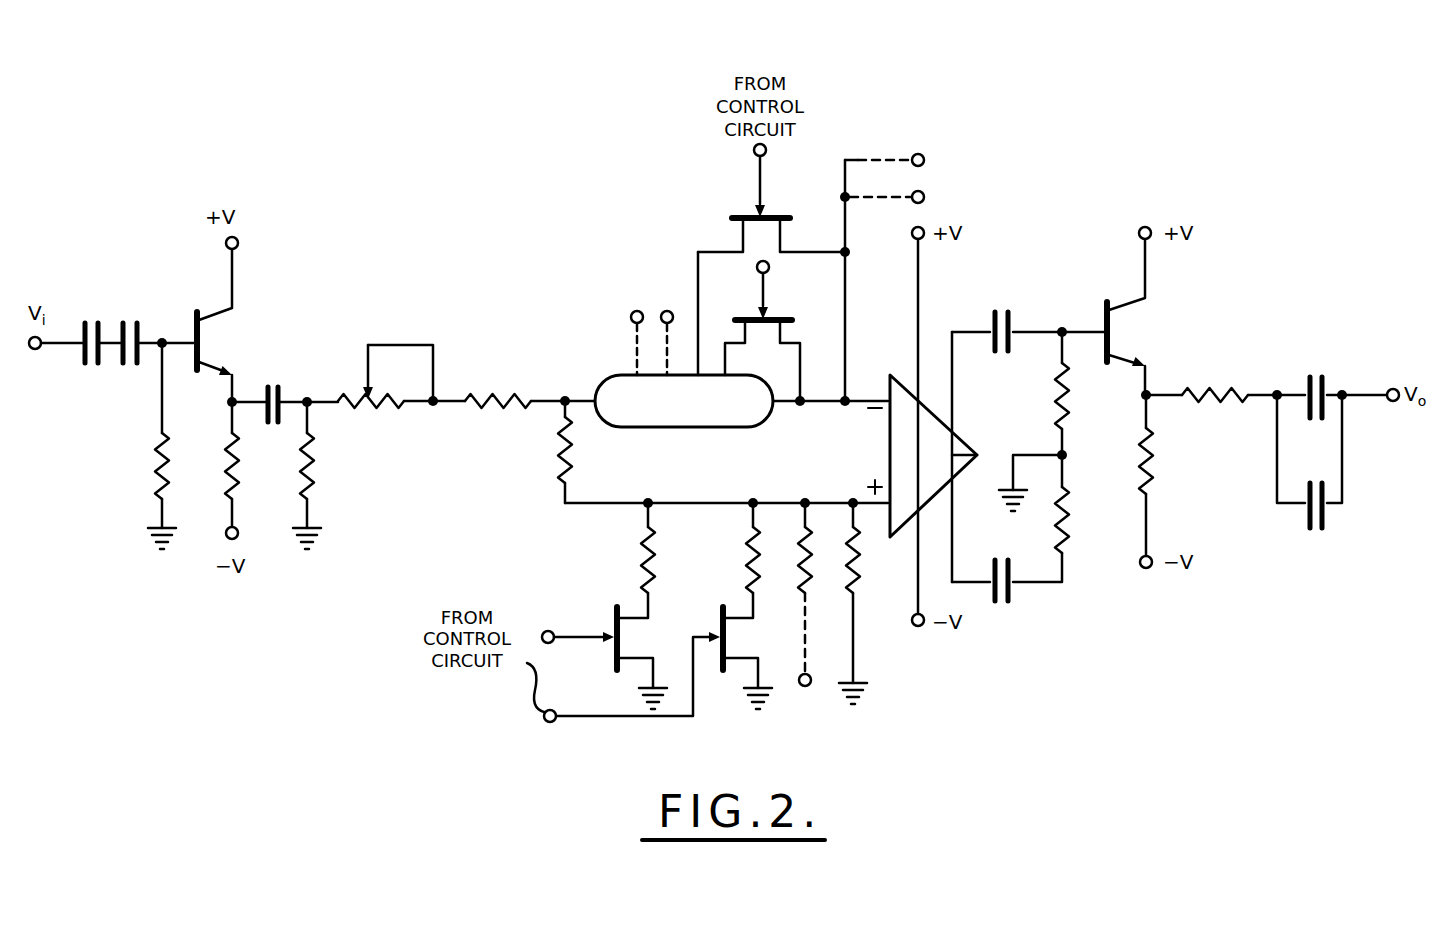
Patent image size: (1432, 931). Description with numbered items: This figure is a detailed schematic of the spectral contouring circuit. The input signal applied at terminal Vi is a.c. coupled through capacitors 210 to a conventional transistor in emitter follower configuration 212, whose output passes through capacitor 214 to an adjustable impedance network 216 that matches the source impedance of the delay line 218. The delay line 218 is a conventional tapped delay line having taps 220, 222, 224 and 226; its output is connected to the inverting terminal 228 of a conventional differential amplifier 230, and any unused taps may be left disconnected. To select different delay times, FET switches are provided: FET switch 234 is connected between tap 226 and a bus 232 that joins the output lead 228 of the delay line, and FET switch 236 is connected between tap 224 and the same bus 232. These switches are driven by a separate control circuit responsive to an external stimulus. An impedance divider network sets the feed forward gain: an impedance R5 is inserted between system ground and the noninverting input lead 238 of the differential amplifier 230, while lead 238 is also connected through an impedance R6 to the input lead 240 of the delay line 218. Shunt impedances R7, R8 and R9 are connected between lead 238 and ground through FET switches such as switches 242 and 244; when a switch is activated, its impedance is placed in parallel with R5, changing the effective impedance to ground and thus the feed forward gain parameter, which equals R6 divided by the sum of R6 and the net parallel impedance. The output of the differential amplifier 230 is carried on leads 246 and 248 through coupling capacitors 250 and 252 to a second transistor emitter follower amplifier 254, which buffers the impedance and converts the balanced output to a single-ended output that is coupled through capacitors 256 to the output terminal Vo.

The capacitors 210 is at (114, 316).
The transistor in emitter follower configuration 212 is at (232, 342).
The capacitor 214 is at (283, 388).
The adjustable impedance network 216 is at (407, 422).
The delay line 218 is at (648, 428).
The tap 220 is at (631, 339).
The tap 222 is at (661, 331).
The tap 224 is at (698, 280).
The tap 226 is at (732, 318).
The inverting terminal 228 is at (826, 405).
The differential amplifier 230 is at (955, 435).
The bus 232 is at (850, 327).
The FET switch 234 is at (767, 313).
The FET switch 236 is at (750, 215).
The noninverting input lead 238 is at (724, 501).
The input lead 240 is at (580, 398).
The FET switch 242 is at (615, 620).
The FET switch 244 is at (720, 620).
The lead 246 is at (955, 332).
The lead 248 is at (990, 578).
The coupling capacitor 250 is at (1012, 323).
The coupling capacitor 252 is at (1012, 590).
The second transistor emitter follower amplifier 254 is at (1112, 333).
The capacitors 256 is at (1325, 380).
The impedance R5 is at (860, 560).
The impedance R6 is at (560, 455).
The shunt impedance R7 is at (640, 550).
The shunt impedance R8 is at (746, 550).
The resistor R9 is at (800, 575).